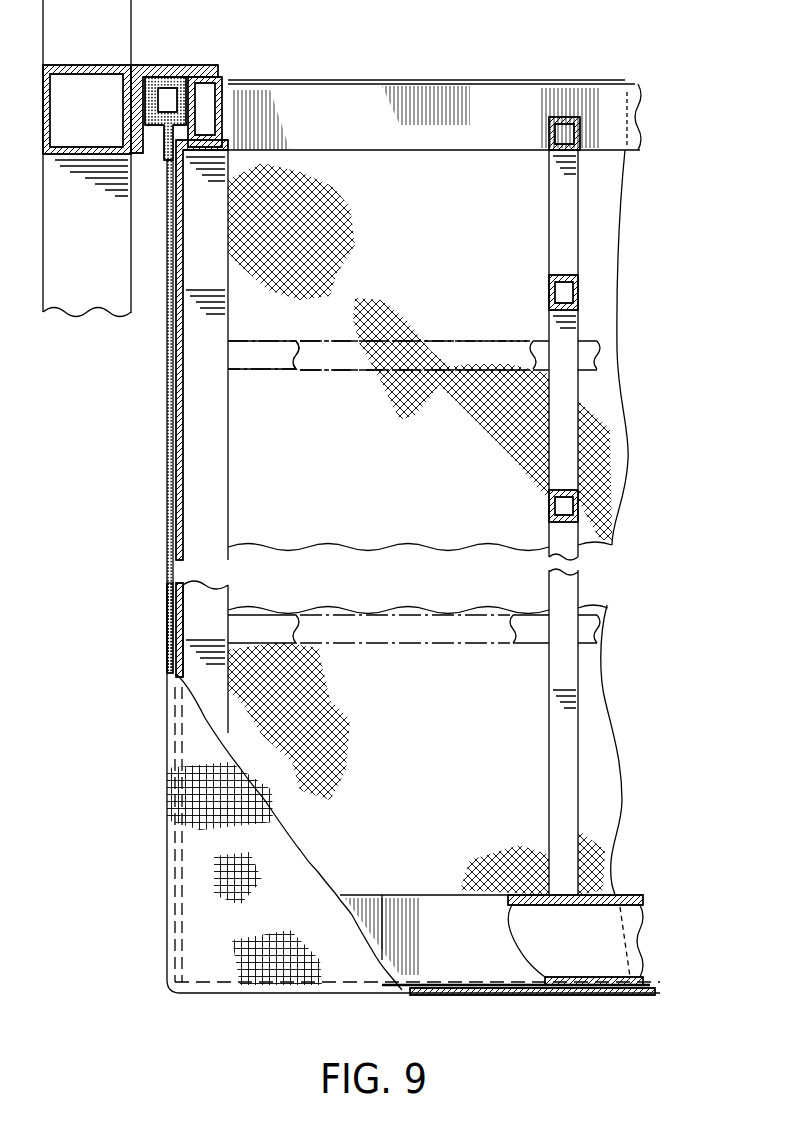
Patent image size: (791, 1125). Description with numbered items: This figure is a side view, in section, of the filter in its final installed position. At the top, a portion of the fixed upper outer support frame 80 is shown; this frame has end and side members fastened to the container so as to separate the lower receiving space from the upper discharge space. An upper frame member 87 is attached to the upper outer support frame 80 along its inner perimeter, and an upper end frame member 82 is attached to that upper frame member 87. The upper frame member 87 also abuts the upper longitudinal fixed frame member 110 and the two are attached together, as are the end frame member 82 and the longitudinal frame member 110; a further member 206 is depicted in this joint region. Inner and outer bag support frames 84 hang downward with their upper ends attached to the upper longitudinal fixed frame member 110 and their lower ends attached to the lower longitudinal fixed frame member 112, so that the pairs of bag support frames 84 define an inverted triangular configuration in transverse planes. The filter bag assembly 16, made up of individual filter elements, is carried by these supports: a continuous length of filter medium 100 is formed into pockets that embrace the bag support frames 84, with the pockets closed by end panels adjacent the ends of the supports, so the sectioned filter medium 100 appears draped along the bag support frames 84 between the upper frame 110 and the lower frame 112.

The upper outer support frame 80 is at (100, 65).
The upper frame member 87 is at (147, 66).
The cap member 206 is at (186, 66).
The end frame member 82 is at (220, 80).
The upper longitudinal fixed frame member 110 is at (480, 80).
The bag support frame 84 is at (228, 428).
The filter bag assembly 16 is at (630, 442).
The filter medium 100 is at (167, 430).
The lower longitudinal fixed frame member 112 is at (612, 932).